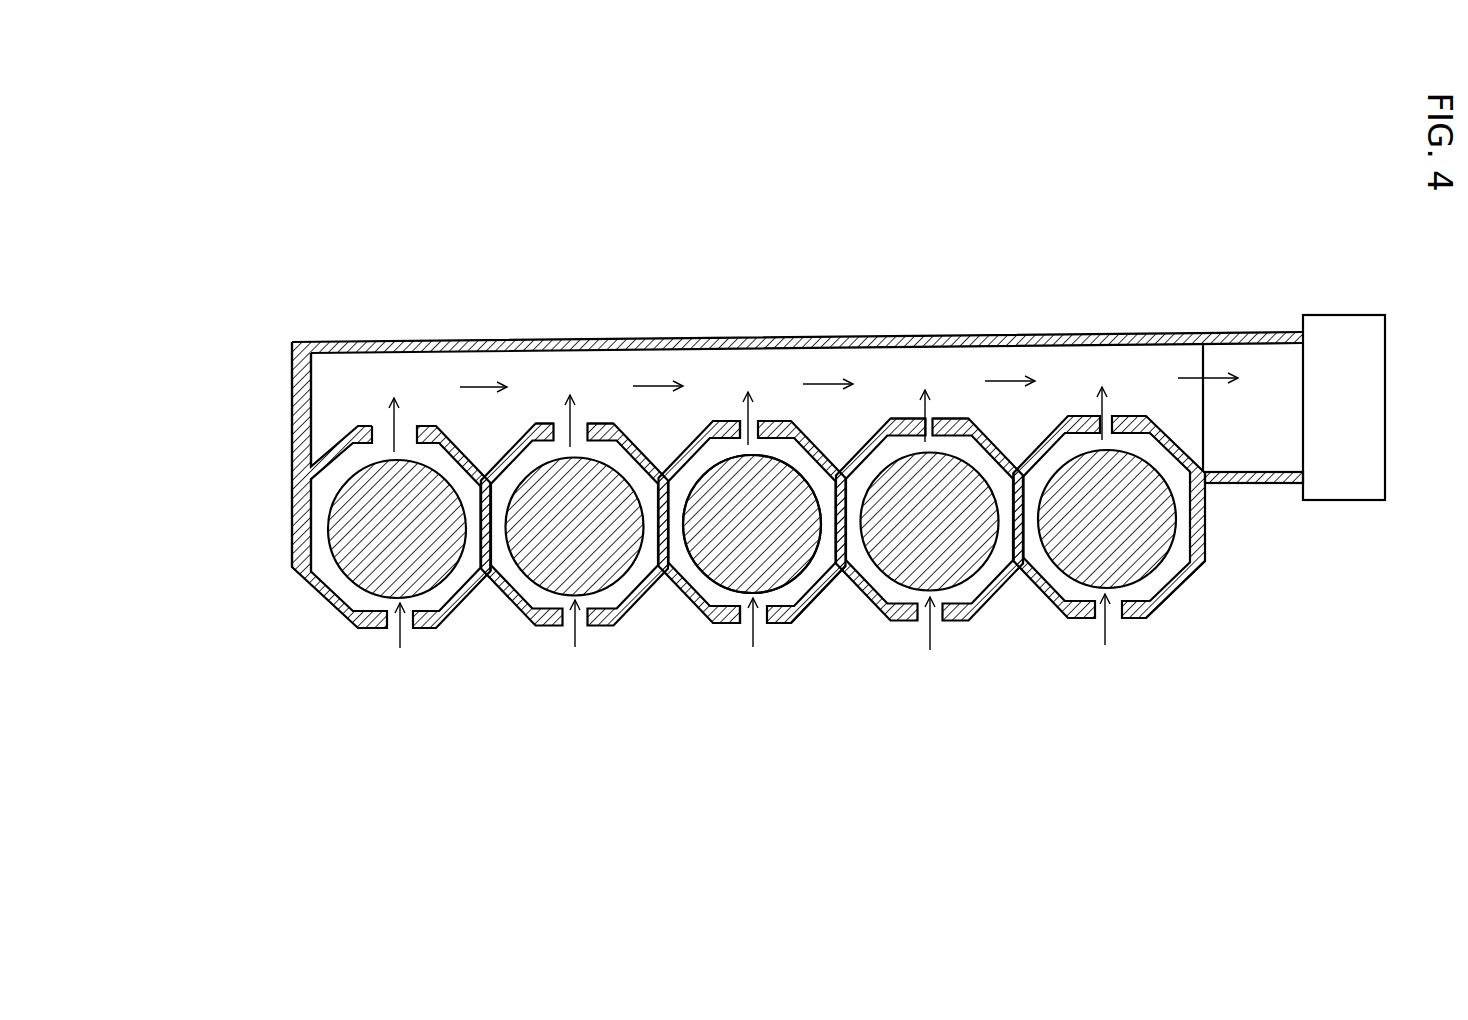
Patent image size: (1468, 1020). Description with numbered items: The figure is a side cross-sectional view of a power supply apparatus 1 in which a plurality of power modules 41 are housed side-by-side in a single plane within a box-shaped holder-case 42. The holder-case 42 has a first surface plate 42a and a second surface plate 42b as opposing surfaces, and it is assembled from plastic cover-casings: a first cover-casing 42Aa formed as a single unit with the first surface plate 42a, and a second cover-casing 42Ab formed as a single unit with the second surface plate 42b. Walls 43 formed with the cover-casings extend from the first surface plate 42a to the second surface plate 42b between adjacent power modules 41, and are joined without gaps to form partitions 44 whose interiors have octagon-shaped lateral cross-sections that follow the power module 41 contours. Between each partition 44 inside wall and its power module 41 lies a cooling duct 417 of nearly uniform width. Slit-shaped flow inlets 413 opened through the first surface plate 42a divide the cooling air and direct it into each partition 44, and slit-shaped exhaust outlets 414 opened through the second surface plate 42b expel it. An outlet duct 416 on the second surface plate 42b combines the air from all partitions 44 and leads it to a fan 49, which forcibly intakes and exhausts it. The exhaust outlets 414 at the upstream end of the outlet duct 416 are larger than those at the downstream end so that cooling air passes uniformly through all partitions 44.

The electronic component 1 is at (736, 495).
The power module 41 is at (522, 470).
The holder-case 42 is at (178, 573).
The first surface plate 42a is at (724, 623).
The second surface plate 42b is at (780, 421).
The first cover-casing 42Aa is at (291, 562).
The second cover-casing 42Ab is at (285, 488).
The wall 43 is at (522, 470).
The partition 44 is at (792, 594).
The fan 49 is at (1318, 315).
The flow inlet 413 is at (390, 636).
The exhaust outlet 414 is at (381, 417).
The outlet duct 416 is at (1082, 352).
The cooling duct 417 is at (472, 535).